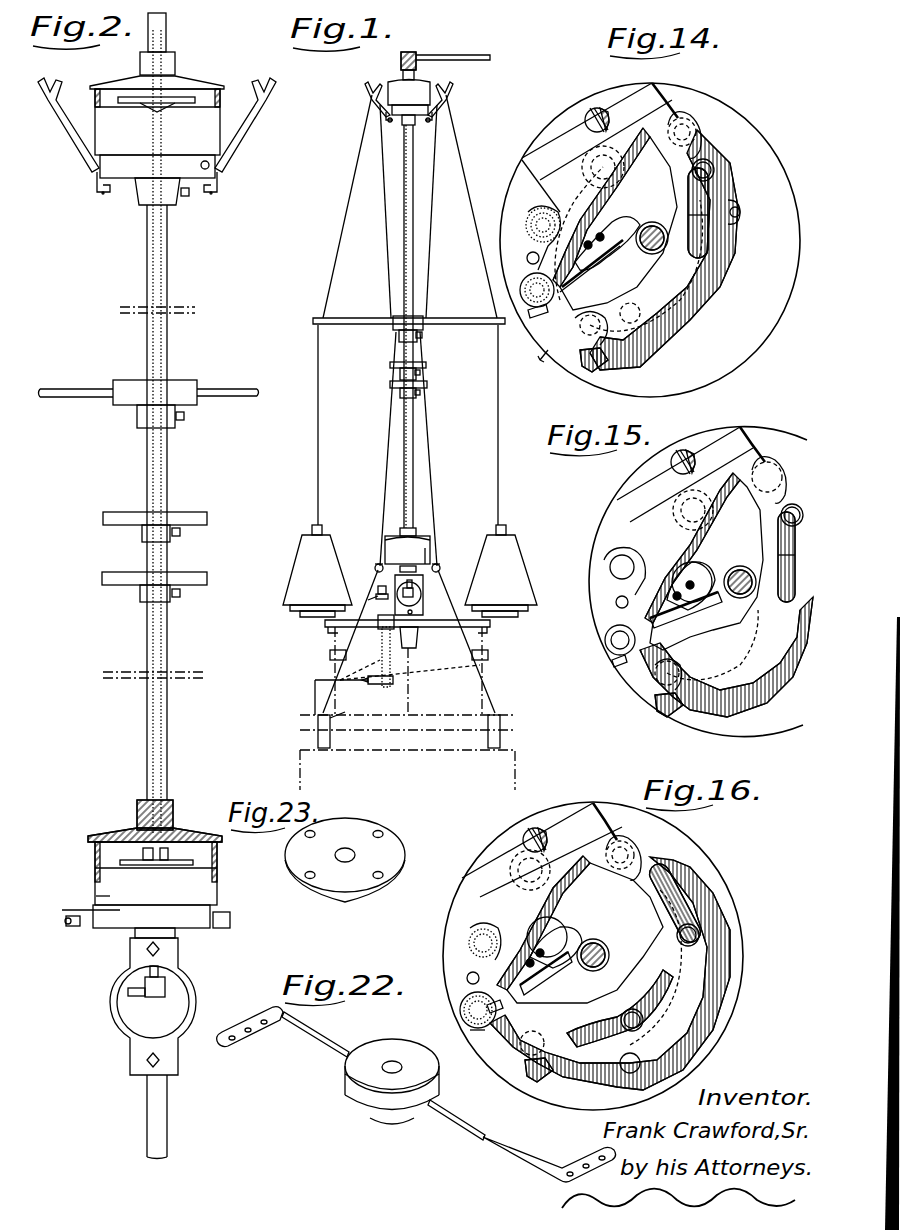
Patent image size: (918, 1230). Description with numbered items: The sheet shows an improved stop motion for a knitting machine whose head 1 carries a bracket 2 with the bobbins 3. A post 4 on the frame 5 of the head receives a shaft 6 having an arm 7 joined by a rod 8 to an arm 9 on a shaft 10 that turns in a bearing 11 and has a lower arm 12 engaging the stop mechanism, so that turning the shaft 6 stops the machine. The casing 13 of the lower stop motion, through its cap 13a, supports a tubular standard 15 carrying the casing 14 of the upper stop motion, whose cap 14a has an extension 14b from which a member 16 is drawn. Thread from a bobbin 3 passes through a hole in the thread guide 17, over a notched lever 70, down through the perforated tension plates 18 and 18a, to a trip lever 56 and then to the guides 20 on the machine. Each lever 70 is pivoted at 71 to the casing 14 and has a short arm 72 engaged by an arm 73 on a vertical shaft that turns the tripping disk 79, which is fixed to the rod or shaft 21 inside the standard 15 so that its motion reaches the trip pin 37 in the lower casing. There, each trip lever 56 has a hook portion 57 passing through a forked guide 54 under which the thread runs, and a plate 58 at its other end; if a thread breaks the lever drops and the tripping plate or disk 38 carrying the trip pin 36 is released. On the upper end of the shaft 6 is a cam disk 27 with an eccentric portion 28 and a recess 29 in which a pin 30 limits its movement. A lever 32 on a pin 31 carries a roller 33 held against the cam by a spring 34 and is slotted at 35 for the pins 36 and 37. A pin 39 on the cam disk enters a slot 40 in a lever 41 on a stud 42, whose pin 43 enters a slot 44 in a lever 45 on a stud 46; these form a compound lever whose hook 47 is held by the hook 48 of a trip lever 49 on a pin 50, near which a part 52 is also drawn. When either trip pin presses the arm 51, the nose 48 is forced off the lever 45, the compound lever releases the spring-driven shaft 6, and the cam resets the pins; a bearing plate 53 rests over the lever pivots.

In FIG. 1, the head of the knitting machine 1 is at (415, 778).
In FIG. 1, the bracket 2 is at (333, 630).
In FIG. 1, the bobbins 3 is at (410, 571).
In FIG. 2, the post 4 is at (168, 1052).
In FIG. 1, the frame of the knitting head 5 is at (329, 655).
In FIG. 2, the shaft 6 is at (158, 973).
In FIG. 1, the shaft 6 is at (412, 584).
In FIG. 2, the arm 7 is at (140, 997).
In FIG. 1, the arm 7 is at (418, 600).
In FIG. 1, the rod 8 is at (395, 571).
In FIG. 1, the arm 9 is at (414, 612).
In FIG. 1, the shaft 10 is at (382, 605).
In FIG. 1, the bearing 11 is at (381, 663).
In FIG. 1, the arm 12 is at (314, 680).
In FIG. 2, the casing of the lower stop motion 13 is at (156, 873).
In FIG. 1, the casing of the lower stop motion 13 is at (407, 550).
In FIG. 2, the cap of the lower stop motion 13a is at (180, 826).
In FIG. 1, the cap of the lower stop motion 13a is at (416, 532).
In FIG. 2, the casing of the upper stop motion 14 is at (157, 140).
In FIG. 1, the casing of the upper stop motion 14 is at (425, 92).
In FIG. 2, the cap of the upper stop motion 14a is at (175, 63).
In FIG. 1, the cap of the upper stop motion 14a is at (402, 75).
In FIG. 2, the extension 14b is at (167, 30).
In FIG. 1, the extension 14b is at (410, 52).
In FIG. 2, the tubular standard 15 is at (168, 267).
In FIG. 1, the tubular standard 15 is at (404, 207).
In FIG. 1, the arm 16 is at (463, 53).
In FIG. 2, the thread guide 17 is at (232, 389).
In FIG. 1, the thread guide 17 is at (350, 324).
In FIG. 22, the thread guide 17 is at (327, 1043).
In FIG. 2, the tension plate 18 is at (207, 519).
In FIG. 1, the tension plate 18 is at (390, 365).
In FIG. 23, the tension plate 18 is at (345, 860).
In FIG. 2, the tension plate 18a is at (115, 576).
In FIG. 1, the tension plate 18a is at (390, 385).
In FIG. 1, the guides 20 is at (320, 712).
In FIG. 2, the shaft 21 is at (147, 237).
In FIG. 14, the cam 27 is at (618, 223).
In FIG. 15, the cam 27 is at (706, 565).
In FIG. 16, the cam 27 is at (585, 933).
In FIG. 14, the eccentric portion 28 is at (601, 207).
In FIG. 15, the eccentric portion 28 is at (722, 500).
In FIG. 16, the eccentric portion 28 is at (548, 923).
In FIG. 14, the recess 29 is at (700, 300).
In FIG. 15, the recess 29 is at (780, 680).
In FIG. 14, the pin 30 is at (740, 212).
In FIG. 14, the pin 31 is at (530, 224).
In FIG. 14, the lever 32 is at (530, 212).
In FIG. 15, the lever 32 is at (618, 555).
In FIG. 16, the lever 32 is at (468, 975).
In FIG. 14, the roller 33 is at (612, 150).
In FIG. 15, the roller 33 is at (700, 495).
In FIG. 16, the roller 33 is at (545, 862).
In FIG. 14, the spring 34 is at (528, 238).
In FIG. 16, the spring 34 is at (480, 925).
In FIG. 14, the slot 35 is at (652, 222).
In FIG. 15, the slot 35 is at (738, 566).
In FIG. 16, the slot 35 is at (593, 939).
In FIG. 14, the trip pin 36 is at (614, 220).
In FIG. 15, the trip pin 36 is at (700, 565).
In FIG. 16, the trip pin 36 is at (572, 930).
In FIG. 2, the trip pin 37 is at (142, 853).
In FIG. 14, the trip pin 37 is at (596, 230).
In FIG. 15, the trip pin 37 is at (692, 582).
In FIG. 16, the trip pin 37 is at (546, 942).
In FIG. 2, the disk 38 is at (170, 860).
In FIG. 16, the pin 39 is at (631, 1010).
In FIG. 14, the slot 40 is at (633, 302).
In FIG. 16, the slot 40 is at (600, 1022).
In FIG. 14, the lever 41 is at (640, 360).
In FIG. 16, the lever 41 is at (610, 973).
In FIG. 16, the stud 42 is at (540, 1050).
In FIG. 14, the pin 43 is at (714, 168).
In FIG. 15, the pin 43 is at (797, 505).
In FIG. 14, the slot 44 is at (708, 195).
In FIG. 15, the slot 44 is at (795, 540).
In FIG. 16, the slot 44 is at (680, 887).
In FIG. 14, the lever 45 is at (712, 298).
In FIG. 15, the lever 45 is at (713, 645).
In FIG. 16, the lever 45 is at (715, 972).
In FIG. 14, the stud 46 is at (700, 125).
In FIG. 15, the stud 46 is at (763, 465).
In FIG. 16, the stud 46 is at (632, 845).
In FIG. 14, the hook 47 is at (580, 328).
In FIG. 15, the hook 47 is at (650, 690).
In FIG. 16, the hook 47 is at (640, 1058).
In FIG. 14, the hook 48 is at (595, 360).
In FIG. 15, the hook 48 is at (662, 705).
In FIG. 16, the hook 48 is at (532, 1075).
In FIG. 14, the trip lever 49 is at (548, 322).
In FIG. 15, the trip lever 49 is at (612, 666).
In FIG. 16, the trip lever 49 is at (497, 1048).
In FIG. 14, the pin 50 is at (527, 258).
In FIG. 15, the pin 50 is at (622, 602).
In FIG. 16, the pin 50 is at (462, 1008).
In FIG. 14, the arm 51 is at (603, 265).
In FIG. 15, the arm 51 is at (667, 607).
In FIG. 16, the arm 51 is at (545, 977).
In FIG. 16, the bushing 52 is at (462, 1021).
In FIG. 14, the bearing plate 53 is at (552, 125).
In FIG. 15, the bearing plate 53 is at (685, 474).
In FIG. 16, the bearing plate 53 is at (542, 850).
In FIG. 2, the forked guide 54 is at (116, 908).
In FIG. 2, the trip lever 56 is at (76, 926).
In FIG. 1, the trip lever 56 is at (376, 566).
In FIG. 2, the hook portion 57 is at (105, 918).
In FIG. 2, the plate 58 is at (230, 920).
In FIG. 2, the notched lever 70 is at (60, 108).
In FIG. 1, the notched lever 70 is at (371, 96).
In FIG. 2, the pivot 71 is at (201, 165).
In FIG. 2, the short arm 72 is at (96, 176).
In FIG. 1, the short arm 72 is at (385, 115).
In FIG. 2, the arm 73 is at (102, 193).
In FIG. 1, the arm 73 is at (410, 127).
In FIG. 2, the disk 79 is at (132, 97).